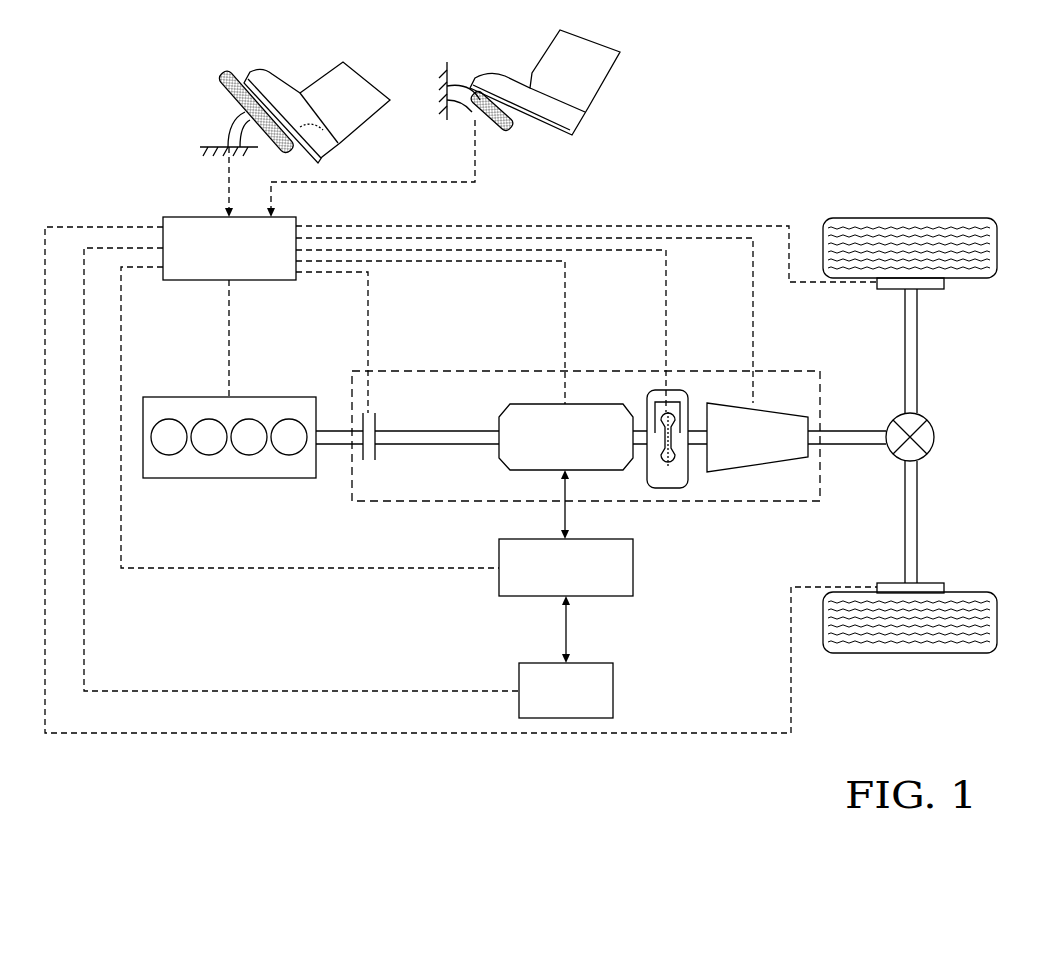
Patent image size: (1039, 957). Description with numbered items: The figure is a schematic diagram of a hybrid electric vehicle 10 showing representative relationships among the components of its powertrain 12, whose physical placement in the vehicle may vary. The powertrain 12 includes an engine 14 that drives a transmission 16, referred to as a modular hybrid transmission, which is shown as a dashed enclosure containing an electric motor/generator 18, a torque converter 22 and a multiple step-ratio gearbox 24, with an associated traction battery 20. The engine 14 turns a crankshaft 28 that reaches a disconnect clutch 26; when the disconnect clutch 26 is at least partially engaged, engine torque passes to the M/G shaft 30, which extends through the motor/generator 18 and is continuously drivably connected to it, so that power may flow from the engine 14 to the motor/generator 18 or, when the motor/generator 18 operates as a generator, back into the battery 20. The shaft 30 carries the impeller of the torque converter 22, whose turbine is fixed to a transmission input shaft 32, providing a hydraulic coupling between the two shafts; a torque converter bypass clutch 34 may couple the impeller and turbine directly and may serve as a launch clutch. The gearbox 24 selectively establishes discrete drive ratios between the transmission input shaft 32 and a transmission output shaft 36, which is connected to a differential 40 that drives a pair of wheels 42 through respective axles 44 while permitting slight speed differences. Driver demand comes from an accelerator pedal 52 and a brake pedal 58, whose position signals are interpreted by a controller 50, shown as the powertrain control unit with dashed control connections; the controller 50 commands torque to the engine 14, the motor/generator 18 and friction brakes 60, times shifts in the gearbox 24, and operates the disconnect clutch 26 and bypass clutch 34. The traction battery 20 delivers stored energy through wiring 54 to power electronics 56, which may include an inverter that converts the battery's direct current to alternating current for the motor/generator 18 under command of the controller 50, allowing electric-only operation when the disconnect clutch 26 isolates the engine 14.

The hybrid electric vehicle 10 is at (697, 147).
The powertrain 12 is at (359, 591).
The engine 14 is at (190, 397).
The transmission 16 is at (635, 371).
The electric motor/generator 18 is at (540, 404).
The traction battery 20 is at (613, 685).
The torque converter 22 is at (662, 488).
The gearbox 24 is at (760, 472).
The disconnect clutch 26 is at (376, 424).
The crankshaft 28 is at (345, 431).
The M/G shaft 30 is at (448, 431).
The transmission input shaft 32 is at (697, 431).
The torque converter bypass clutch 34 is at (672, 395).
The transmission output shaft 36 is at (858, 431).
The differential 40 is at (936, 437).
The wheels 42 is at (912, 218).
The axles 44 is at (917, 350).
The controller 50 is at (197, 217).
The accelerator pedal 52 is at (238, 105).
The wiring 54 is at (566, 635).
The power electronics 56 is at (633, 565).
The brake pedal 58 is at (510, 128).
The friction brakes 60 is at (947, 283).